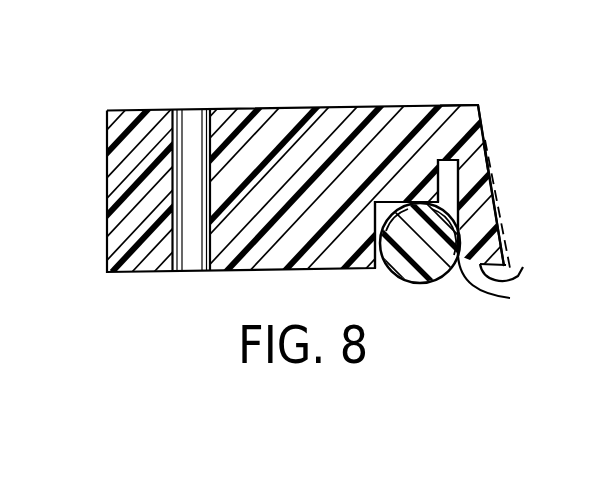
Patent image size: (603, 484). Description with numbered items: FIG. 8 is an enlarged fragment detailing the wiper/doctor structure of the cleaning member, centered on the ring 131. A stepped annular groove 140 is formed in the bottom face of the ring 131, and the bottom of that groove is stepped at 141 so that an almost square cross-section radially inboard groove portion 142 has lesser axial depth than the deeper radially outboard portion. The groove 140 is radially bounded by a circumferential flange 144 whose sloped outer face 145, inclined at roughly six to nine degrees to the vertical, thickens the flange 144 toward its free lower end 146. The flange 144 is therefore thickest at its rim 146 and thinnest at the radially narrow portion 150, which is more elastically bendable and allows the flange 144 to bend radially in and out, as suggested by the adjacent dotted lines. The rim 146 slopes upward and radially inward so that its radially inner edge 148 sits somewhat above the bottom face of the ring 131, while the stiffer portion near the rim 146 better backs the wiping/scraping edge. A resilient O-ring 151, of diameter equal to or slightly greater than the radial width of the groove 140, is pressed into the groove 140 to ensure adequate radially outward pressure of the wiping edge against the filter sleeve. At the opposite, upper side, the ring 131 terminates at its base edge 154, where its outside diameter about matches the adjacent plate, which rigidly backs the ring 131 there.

The ring 131 is at (392, 117).
The base edge 154 is at (477, 105).
The sloped outer face 145 is at (490, 167).
The radially narrow portion 150 is at (465, 178).
The step 141 is at (493, 198).
The circumferential flange 144 is at (498, 228).
The free end 146 is at (495, 273).
The radially inner edge 148 is at (463, 268).
The radially inboard groove portion 142 is at (408, 282).
The O-ring 151 is at (443, 283).
The stepped annular groove 140 is at (393, 262).